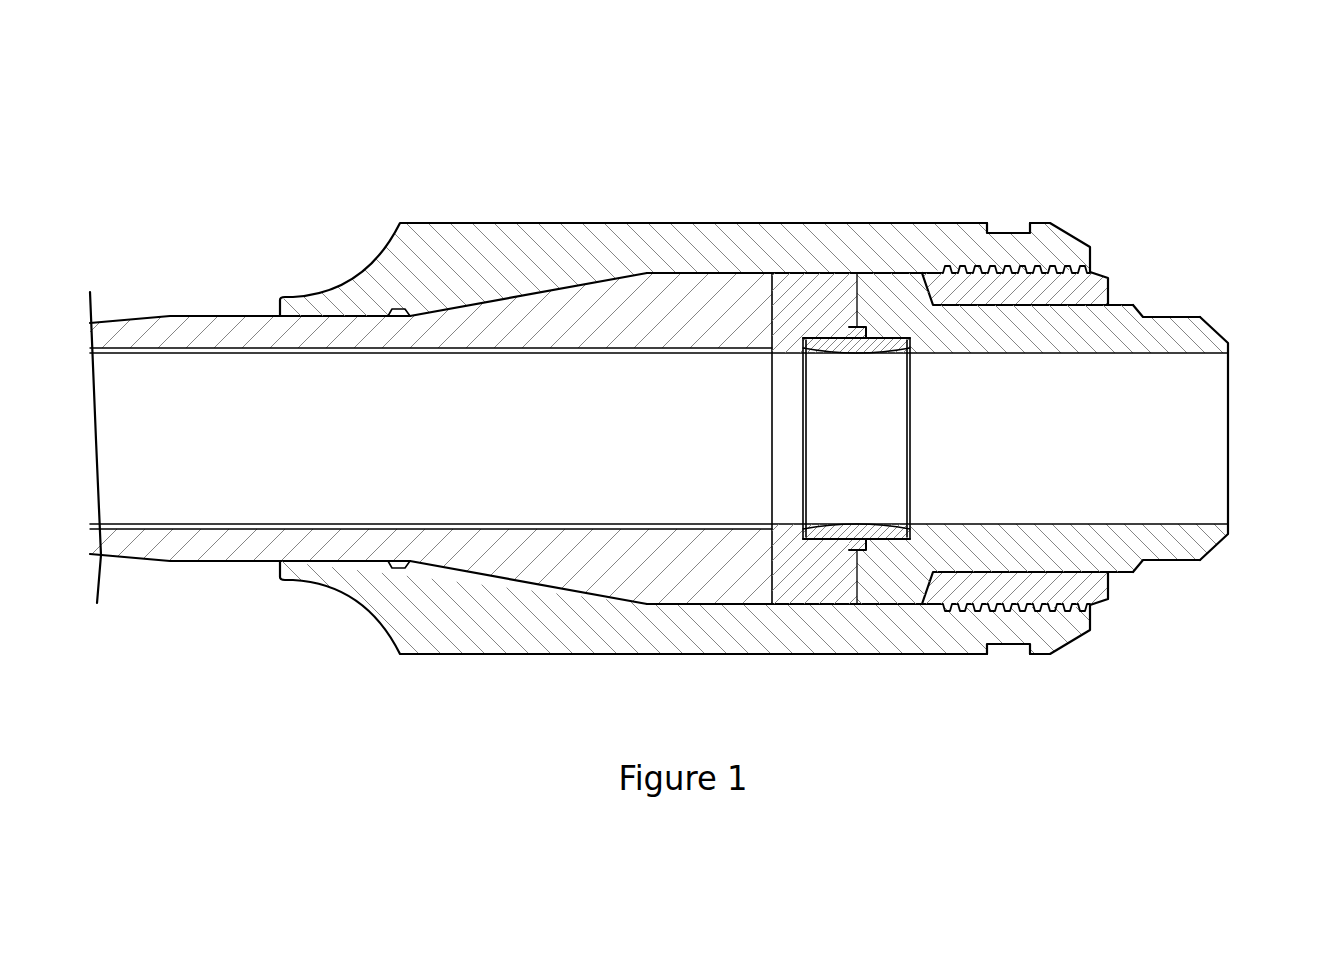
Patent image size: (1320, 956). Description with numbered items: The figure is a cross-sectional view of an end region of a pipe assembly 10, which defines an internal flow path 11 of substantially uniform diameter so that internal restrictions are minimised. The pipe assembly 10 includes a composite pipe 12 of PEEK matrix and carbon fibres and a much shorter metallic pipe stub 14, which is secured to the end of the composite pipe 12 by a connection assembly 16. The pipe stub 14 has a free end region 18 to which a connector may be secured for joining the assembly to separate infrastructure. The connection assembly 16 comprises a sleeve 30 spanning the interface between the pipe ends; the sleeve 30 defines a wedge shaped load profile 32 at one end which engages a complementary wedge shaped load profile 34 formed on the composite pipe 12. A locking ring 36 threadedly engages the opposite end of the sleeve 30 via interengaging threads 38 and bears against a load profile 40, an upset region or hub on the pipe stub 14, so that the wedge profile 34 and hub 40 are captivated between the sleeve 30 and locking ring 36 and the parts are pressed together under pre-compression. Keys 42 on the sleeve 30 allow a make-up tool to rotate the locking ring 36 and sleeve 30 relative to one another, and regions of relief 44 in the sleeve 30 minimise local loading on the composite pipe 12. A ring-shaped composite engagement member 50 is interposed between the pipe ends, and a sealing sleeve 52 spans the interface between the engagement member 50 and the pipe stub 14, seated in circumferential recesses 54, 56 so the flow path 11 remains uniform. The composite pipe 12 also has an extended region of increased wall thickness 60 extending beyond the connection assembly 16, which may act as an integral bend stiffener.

The pipe assembly 10 is at (294, 165).
The internal flow path 11 is at (659, 438).
The composite pipe 12 is at (124, 543).
The metallic pipe stub 14 is at (1162, 550).
The connection assembly 16 is at (836, 184).
The free end region 18 is at (1230, 342).
The sleeve 30 is at (580, 225).
The wedge shaped load profile 32 is at (463, 275).
The wedge shaped load profile 34 is at (557, 300).
The locking ring 36 is at (1098, 282).
The interengaging threads 38 is at (1035, 268).
The load profile 40 is at (902, 578).
The keys 42 is at (1010, 230).
The regions of relief 44 is at (402, 310).
The engagement member 50 is at (807, 285).
The sealing sleeve 52 is at (838, 538).
The circumferential recess 54 is at (806, 512).
The circumferential recess 56 is at (909, 515).
The extended region of increased wall thickness 60 is at (185, 328).